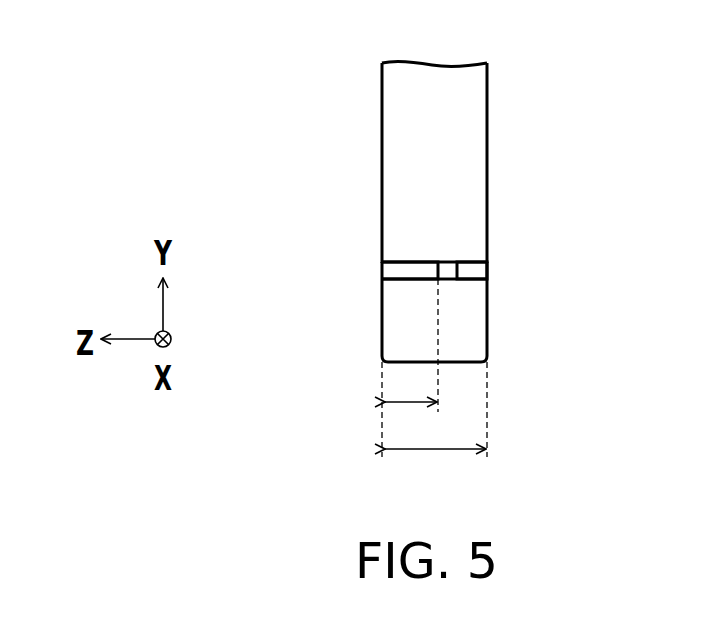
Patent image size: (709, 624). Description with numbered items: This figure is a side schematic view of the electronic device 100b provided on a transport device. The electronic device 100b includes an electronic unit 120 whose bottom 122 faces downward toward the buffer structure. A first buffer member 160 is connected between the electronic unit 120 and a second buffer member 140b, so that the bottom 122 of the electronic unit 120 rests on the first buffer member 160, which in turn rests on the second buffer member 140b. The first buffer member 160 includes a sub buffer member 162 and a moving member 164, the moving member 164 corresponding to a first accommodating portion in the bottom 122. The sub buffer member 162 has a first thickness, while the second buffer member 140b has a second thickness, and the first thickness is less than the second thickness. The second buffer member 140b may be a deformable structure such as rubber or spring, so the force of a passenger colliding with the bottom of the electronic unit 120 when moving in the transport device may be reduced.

The electronic device 100b is at (456, 276).
The electronic unit 120 is at (509, 162).
The bottom 122 is at (478, 155).
The second buffer member 140b is at (470, 323).
The first buffer member 160 is at (436, 271).
The sub buffer member 162 is at (390, 272).
The moving member 164 is at (478, 272).